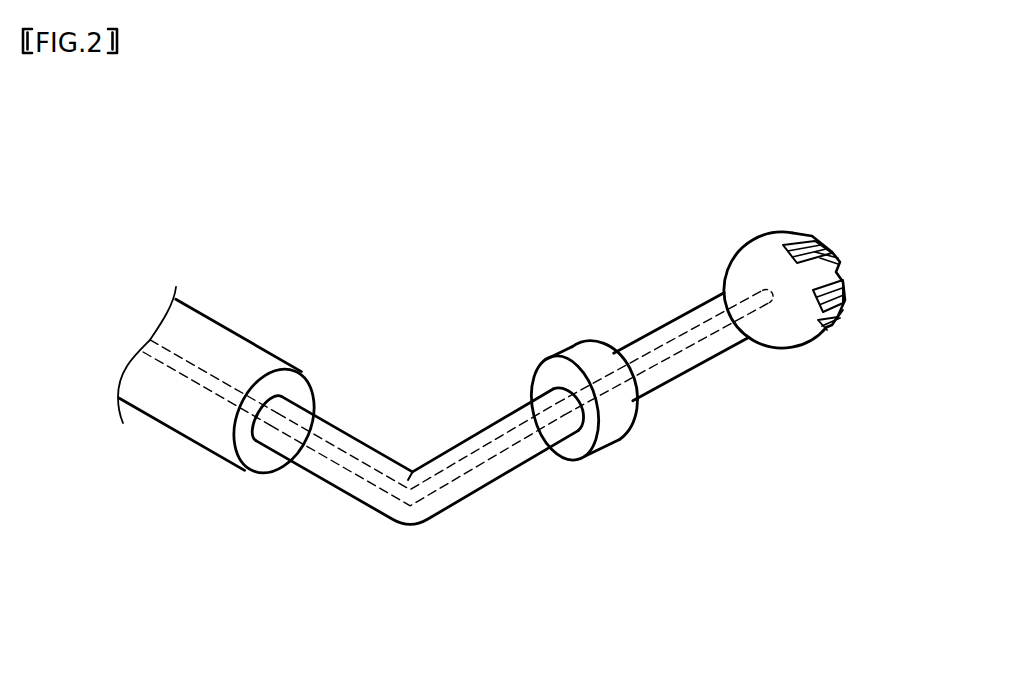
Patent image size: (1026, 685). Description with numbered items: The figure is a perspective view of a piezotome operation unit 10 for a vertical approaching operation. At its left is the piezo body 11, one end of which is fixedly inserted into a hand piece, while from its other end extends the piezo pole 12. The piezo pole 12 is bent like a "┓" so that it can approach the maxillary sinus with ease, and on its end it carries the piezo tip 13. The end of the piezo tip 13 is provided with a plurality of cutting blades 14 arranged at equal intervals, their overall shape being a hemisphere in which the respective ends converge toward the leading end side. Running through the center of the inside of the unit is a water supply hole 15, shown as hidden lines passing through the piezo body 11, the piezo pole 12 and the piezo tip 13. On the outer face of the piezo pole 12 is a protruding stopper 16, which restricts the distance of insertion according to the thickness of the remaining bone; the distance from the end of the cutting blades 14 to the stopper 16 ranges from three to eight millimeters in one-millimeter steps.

The piezotome operation unit 10 is at (608, 255).
The piezo body 11 is at (207, 343).
The piezo pole 12 is at (468, 488).
The piezo tip 13 is at (793, 331).
The cutting blades 14 is at (818, 256).
The water supply hole 15 is at (650, 366).
The stopper 16 is at (620, 433).